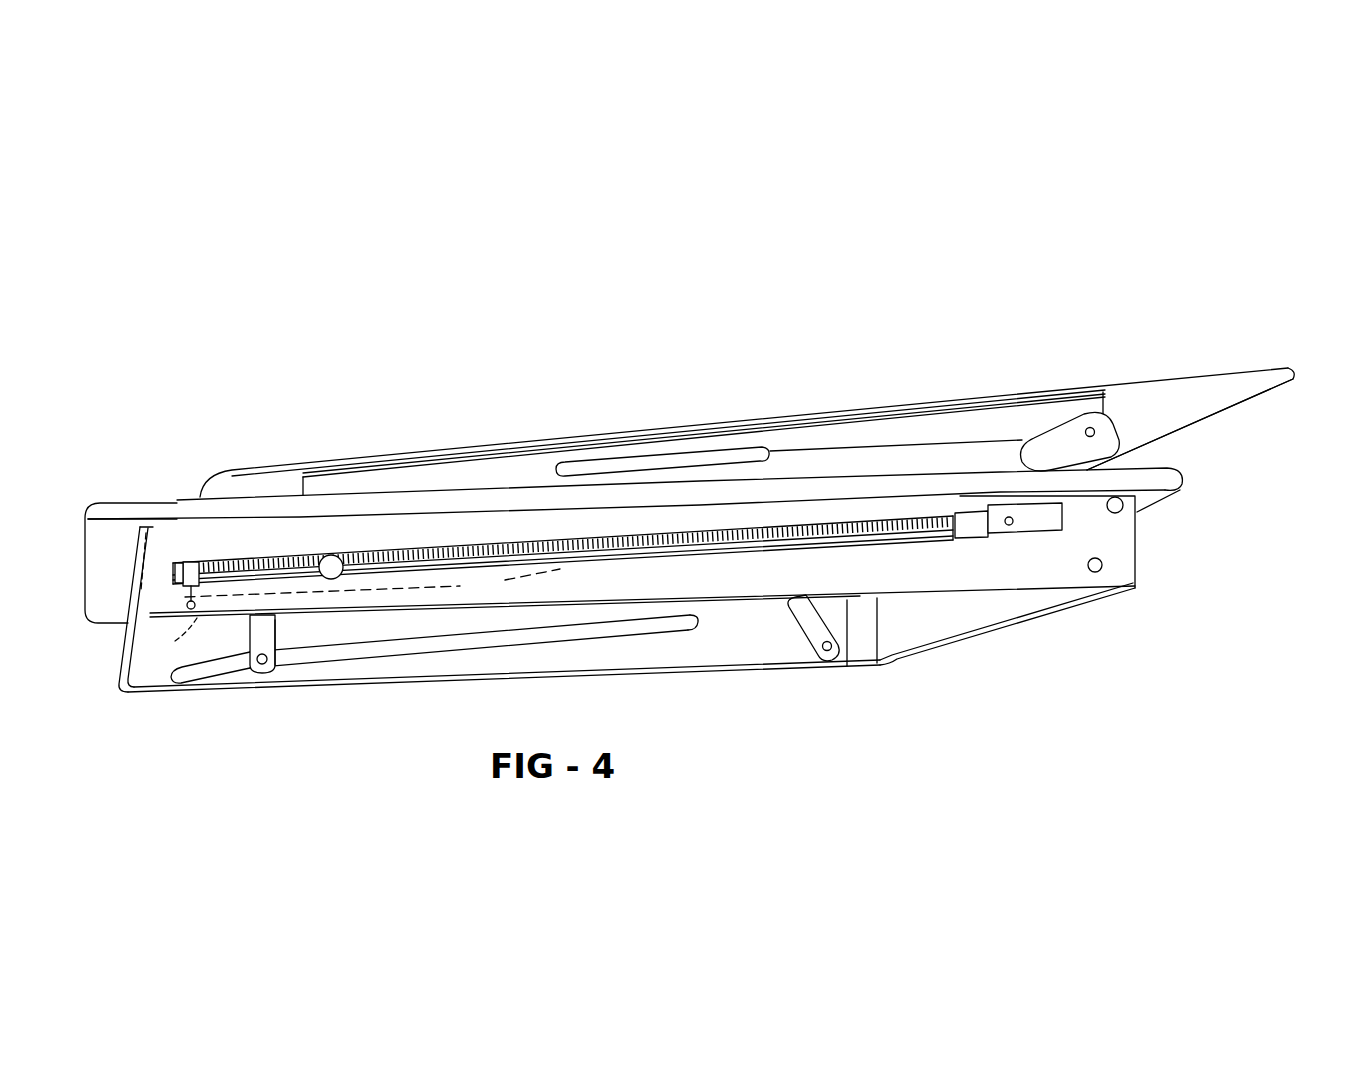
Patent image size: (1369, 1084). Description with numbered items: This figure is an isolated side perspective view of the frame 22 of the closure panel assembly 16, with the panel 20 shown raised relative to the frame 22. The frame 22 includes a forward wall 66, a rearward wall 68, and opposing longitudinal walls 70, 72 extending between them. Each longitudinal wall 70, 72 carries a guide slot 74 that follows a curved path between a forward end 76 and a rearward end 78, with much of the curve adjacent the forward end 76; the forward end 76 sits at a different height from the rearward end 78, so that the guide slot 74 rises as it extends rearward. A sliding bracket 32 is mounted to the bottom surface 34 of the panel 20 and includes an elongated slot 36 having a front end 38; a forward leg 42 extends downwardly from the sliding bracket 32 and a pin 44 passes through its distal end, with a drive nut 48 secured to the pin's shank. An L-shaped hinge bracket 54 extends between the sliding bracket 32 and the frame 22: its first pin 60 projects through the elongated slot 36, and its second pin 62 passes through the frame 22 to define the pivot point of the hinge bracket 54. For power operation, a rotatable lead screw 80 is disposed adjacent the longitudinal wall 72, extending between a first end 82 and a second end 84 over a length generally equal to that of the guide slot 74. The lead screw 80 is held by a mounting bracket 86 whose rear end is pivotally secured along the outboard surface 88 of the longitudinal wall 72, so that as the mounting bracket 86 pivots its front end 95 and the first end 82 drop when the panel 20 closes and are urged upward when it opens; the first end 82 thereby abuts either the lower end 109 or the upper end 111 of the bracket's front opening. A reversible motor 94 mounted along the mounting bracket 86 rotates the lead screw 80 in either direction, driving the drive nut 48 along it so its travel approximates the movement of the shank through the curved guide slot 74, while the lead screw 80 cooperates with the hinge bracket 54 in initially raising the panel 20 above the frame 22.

The closure panel assembly 16 is at (1250, 246).
The panel 20 is at (779, 384).
The frame 22 is at (635, 640).
The sliding bracket 32 is at (704, 403).
The bottom surface 34 is at (1180, 415).
The elongated slot 36 is at (757, 458).
The front end 38 is at (560, 474).
The forward leg 42 is at (329, 708).
The pin 44 is at (247, 711).
The drive nut 48 is at (297, 701).
The L-shaped hinge bracket 54 is at (843, 710).
The first pin 60 is at (1107, 352).
The second pin 62 is at (1103, 565).
The forward wall 66 is at (124, 652).
The rearward wall 68 is at (1007, 655).
The longitudinal wall 70 is at (302, 747).
The longitudinal wall 72 is at (800, 705).
The guide slot 74 is at (440, 645).
The forward end 76 is at (178, 687).
The rearward end 78 is at (684, 630).
The lead screw 80 is at (563, 484).
The first end 82 is at (158, 488).
The second end 84 is at (563, 426).
The mounting bracket 86 is at (563, 692).
The outboard surface 88 is at (975, 583).
The reversible motor 94 is at (1000, 535).
The front end 95 is at (184, 561).
The lower end 109 is at (147, 623).
The upper end 111 is at (178, 558).